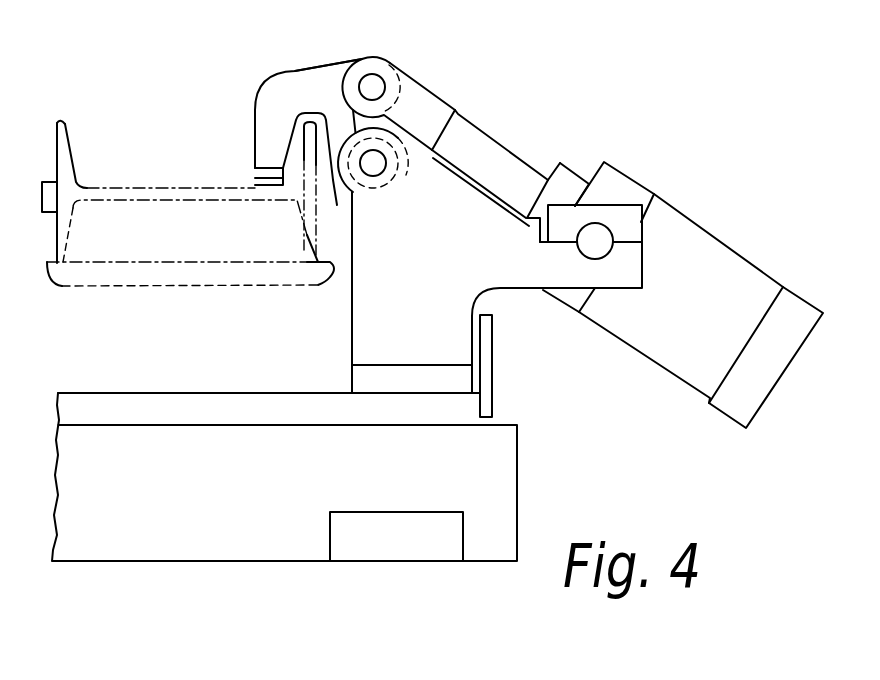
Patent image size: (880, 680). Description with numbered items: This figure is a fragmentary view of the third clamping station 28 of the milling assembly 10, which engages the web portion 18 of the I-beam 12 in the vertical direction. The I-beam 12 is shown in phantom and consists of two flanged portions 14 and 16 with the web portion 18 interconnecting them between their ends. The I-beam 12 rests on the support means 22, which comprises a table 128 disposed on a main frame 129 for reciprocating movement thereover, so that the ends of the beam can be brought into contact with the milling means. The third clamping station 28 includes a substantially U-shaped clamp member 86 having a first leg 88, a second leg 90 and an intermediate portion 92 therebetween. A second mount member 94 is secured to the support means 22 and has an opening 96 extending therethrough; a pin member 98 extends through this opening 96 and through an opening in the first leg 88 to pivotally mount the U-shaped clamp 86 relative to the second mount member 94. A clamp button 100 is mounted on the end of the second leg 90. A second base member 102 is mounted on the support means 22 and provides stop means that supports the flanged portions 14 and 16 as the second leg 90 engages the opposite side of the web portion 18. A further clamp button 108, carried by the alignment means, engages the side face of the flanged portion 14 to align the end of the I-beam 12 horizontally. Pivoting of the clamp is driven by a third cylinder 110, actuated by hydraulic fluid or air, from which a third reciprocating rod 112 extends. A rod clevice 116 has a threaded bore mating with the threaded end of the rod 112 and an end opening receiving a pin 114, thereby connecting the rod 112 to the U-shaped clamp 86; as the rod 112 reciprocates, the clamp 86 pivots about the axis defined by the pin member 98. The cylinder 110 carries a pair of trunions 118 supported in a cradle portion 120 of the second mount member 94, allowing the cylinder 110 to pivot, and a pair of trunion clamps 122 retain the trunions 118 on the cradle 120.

The milling assembly 10 is at (627, 260).
The I-beam 12 is at (105, 186).
The flanged portion 14 is at (316, 252).
The flanged portion 16 is at (66, 126).
The web portion 18 is at (168, 190).
The support means 22 is at (520, 488).
The third clamping station 28 is at (663, 156).
The U-shaped clamp member 86 is at (315, 65).
The first leg 88 is at (314, 185).
The second leg 90 is at (270, 140).
The intermediate portion 92 is at (292, 75).
The second mount member 94 is at (445, 342).
The opening 96 is at (385, 160).
The pin member 98 is at (375, 168).
The clamp button 100 is at (265, 178).
The second base member 102 is at (207, 286).
The clamp button 108 is at (50, 203).
The third cylinder 110 is at (695, 242).
The third reciprocating rod 112 is at (484, 185).
The pin 114 is at (372, 87).
The rod clevice 116 is at (420, 106).
The trunions 118 is at (612, 250).
The cradle portion 120 is at (585, 252).
The trunion clamps 122 is at (567, 210).
The table 128 is at (515, 443).
The main frame 129 is at (395, 540).